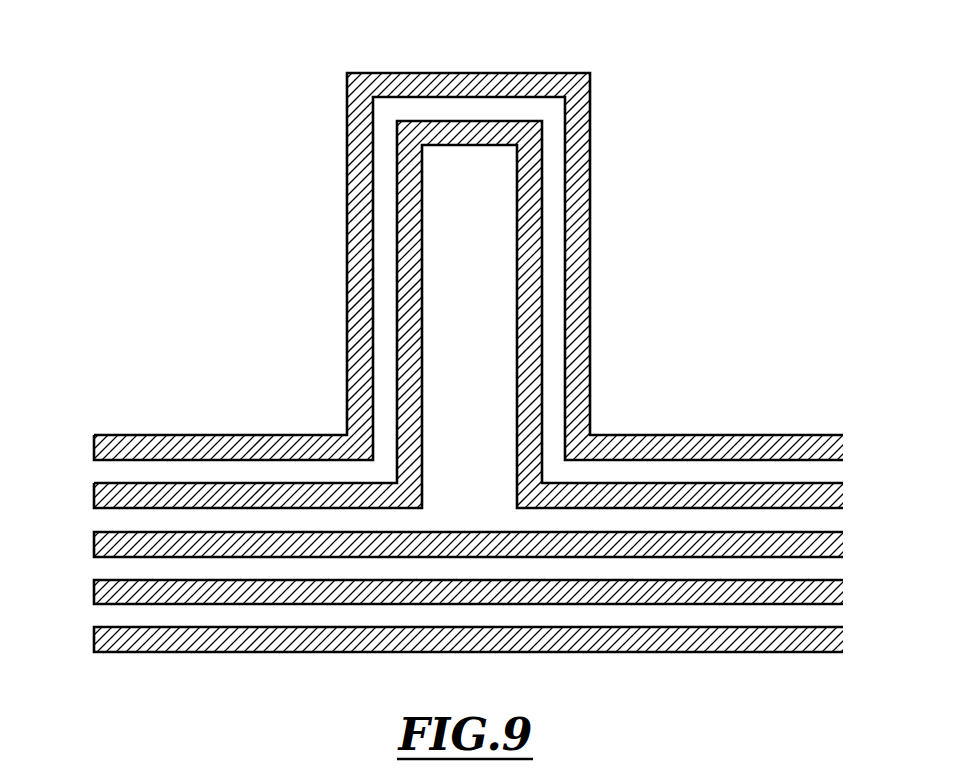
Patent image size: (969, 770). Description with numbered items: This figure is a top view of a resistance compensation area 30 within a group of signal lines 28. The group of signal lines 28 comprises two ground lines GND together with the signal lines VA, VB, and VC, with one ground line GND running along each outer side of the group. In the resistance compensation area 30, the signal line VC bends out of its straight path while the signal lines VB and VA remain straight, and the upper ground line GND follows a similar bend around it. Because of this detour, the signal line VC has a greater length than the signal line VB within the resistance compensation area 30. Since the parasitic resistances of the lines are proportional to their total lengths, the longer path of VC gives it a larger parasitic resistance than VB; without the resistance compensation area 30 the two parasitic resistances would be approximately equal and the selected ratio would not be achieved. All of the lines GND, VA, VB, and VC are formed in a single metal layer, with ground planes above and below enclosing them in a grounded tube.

The resistance compensation area 30 is at (484, 385).
The group of signal lines 28 is at (484, 385).
The signal line VC is at (150, 20).
The signal line VB is at (484, 385).
The signal line VA is at (484, 385).
The ground line GND is at (115, 378).